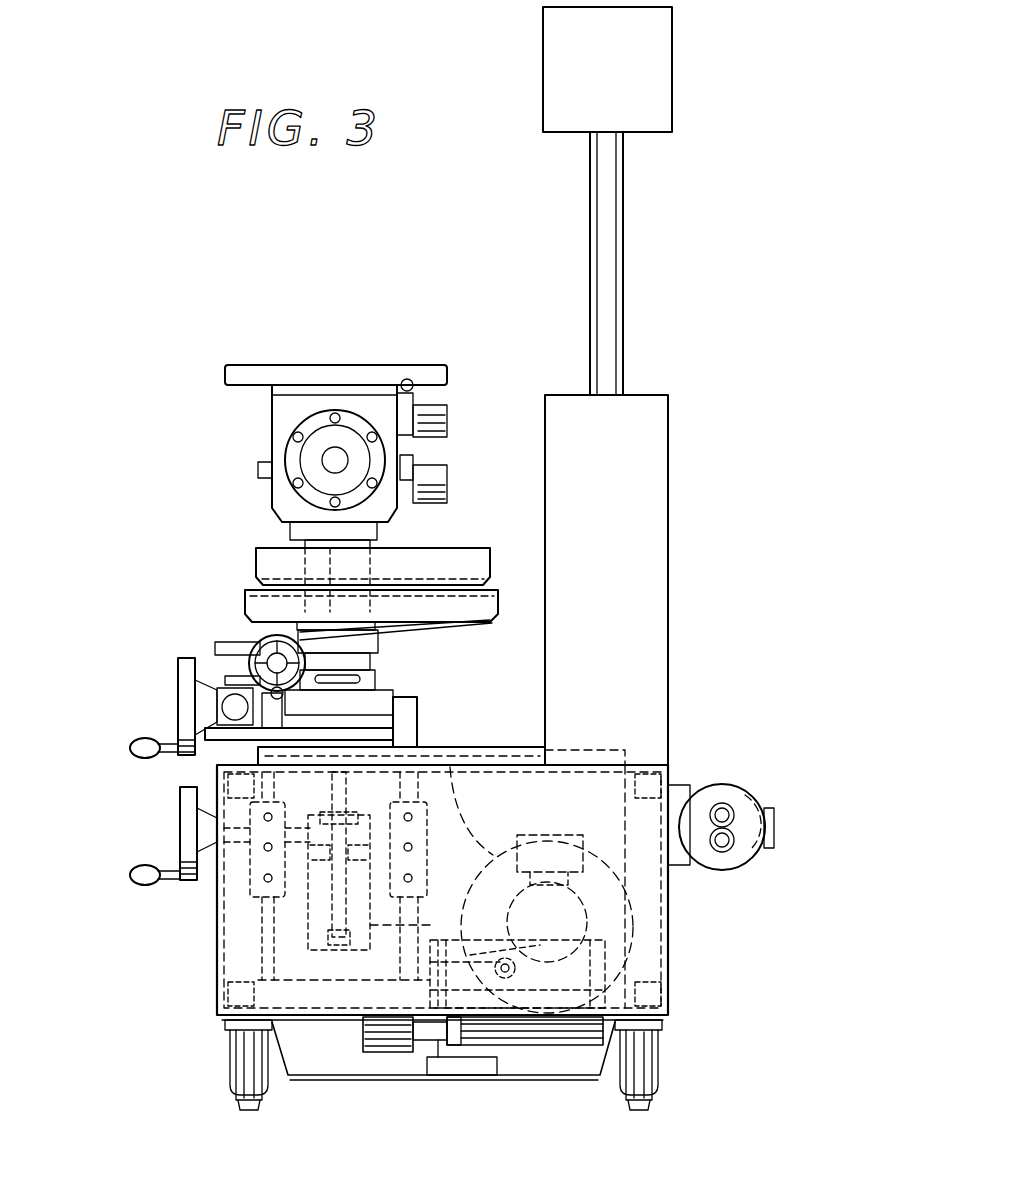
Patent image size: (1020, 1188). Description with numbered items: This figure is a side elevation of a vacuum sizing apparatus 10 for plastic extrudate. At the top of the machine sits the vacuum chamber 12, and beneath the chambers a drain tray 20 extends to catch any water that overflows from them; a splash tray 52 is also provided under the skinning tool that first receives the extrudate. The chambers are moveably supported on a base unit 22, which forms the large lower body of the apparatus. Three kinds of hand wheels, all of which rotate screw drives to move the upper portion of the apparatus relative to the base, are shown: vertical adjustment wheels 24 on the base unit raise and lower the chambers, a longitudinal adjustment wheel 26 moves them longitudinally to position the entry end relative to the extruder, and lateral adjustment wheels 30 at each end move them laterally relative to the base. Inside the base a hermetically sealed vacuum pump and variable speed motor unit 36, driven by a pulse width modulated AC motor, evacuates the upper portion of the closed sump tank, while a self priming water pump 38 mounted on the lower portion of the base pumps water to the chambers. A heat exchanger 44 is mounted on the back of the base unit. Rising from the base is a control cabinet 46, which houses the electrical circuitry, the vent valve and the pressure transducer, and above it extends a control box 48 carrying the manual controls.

The vacuum sizing apparatus 10 is at (468, 308).
The vacuum chamber 12 is at (272, 425).
The drain tray 20 is at (478, 607).
The base unit 22 is at (672, 913).
The vertical adjustment wheels 24 is at (180, 822).
The longitudinal adjustment wheel 26 is at (178, 668).
The lateral adjustment wheels 30 is at (277, 663).
The hermetically sealed vacuum pump and variable speed motor unit 36 is at (453, 775).
The self priming water pump 38 is at (533, 1042).
The heat exchanger 44 is at (733, 786).
The control cabinet 46 is at (656, 503).
The control box 48 is at (672, 45).
The splash tray 52 is at (455, 550).